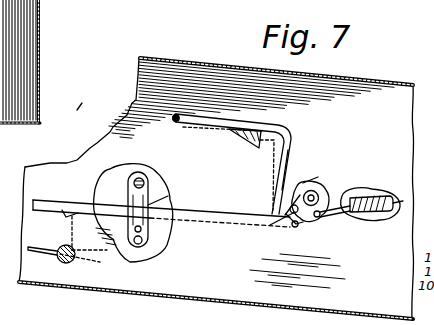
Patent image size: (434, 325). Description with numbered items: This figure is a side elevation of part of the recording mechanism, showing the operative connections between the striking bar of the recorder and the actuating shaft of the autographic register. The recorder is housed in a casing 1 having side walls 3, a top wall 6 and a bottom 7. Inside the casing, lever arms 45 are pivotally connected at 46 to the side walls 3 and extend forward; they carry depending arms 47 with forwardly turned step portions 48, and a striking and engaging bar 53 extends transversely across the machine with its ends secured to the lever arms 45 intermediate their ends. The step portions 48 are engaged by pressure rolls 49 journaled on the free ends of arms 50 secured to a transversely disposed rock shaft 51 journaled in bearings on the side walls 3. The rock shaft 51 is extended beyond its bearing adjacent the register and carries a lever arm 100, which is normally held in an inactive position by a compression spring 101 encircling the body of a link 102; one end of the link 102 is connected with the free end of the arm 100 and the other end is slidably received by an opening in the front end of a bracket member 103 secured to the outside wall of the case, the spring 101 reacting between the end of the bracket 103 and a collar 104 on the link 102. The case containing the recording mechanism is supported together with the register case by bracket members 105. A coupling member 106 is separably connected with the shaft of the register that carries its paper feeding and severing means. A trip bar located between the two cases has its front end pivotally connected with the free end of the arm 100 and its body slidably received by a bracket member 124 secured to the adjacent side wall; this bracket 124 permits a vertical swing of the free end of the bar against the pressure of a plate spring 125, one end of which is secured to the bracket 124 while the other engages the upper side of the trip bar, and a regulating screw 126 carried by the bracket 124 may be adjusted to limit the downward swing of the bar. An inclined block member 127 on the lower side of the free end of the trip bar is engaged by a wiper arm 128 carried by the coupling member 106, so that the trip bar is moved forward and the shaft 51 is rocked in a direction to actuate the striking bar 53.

The casing 1 is at (110, 129).
The side walls 3 is at (172, 64).
The top wall 6 is at (230, 60).
The bottom 7 is at (157, 297).
The lever arms 45 is at (350, 132).
The pivotal connection 46 is at (173, 116).
The depending arms 47 is at (350, 153).
The step portions 48 is at (299, 227).
The pressure rolls 49 is at (292, 215).
The arms 50 is at (338, 169).
The rock shaft 51 is at (386, 154).
The striking and engaging bar 53 is at (251, 150).
The lever arm 100 is at (314, 207).
The compression spring 101 is at (370, 223).
The link 102 is at (386, 172).
The bracket member 103 is at (372, 222).
The collar 104 is at (389, 193).
The bracket members 105 is at (119, 6).
The coupling member 106 is at (72, 282).
The bracket member 124 is at (213, 159).
The plate spring 125 is at (118, 245).
The regulating screw 126 is at (192, 282).
The inclined block member 127 is at (72, 211).
The wiper arm 128 is at (65, 237).